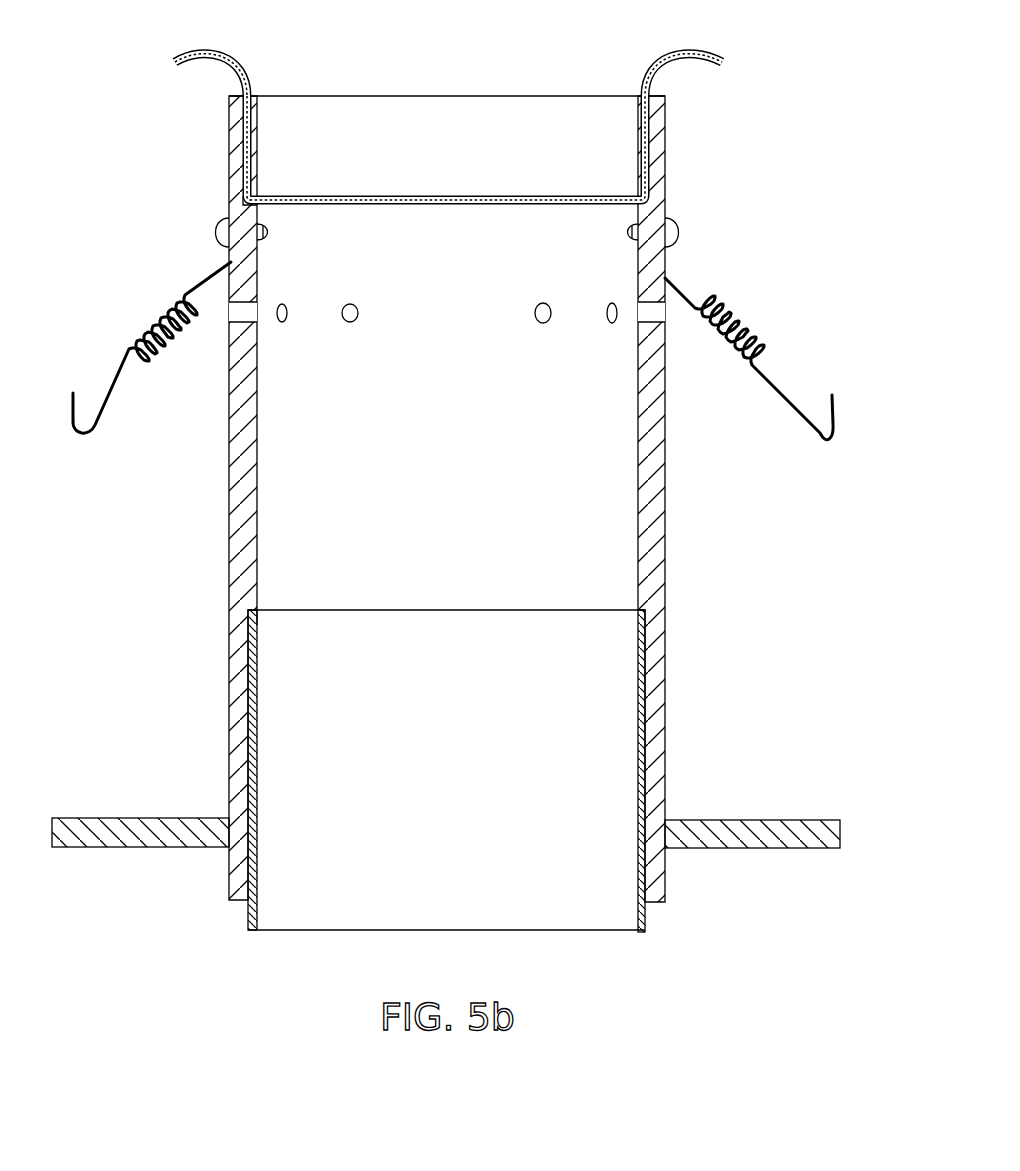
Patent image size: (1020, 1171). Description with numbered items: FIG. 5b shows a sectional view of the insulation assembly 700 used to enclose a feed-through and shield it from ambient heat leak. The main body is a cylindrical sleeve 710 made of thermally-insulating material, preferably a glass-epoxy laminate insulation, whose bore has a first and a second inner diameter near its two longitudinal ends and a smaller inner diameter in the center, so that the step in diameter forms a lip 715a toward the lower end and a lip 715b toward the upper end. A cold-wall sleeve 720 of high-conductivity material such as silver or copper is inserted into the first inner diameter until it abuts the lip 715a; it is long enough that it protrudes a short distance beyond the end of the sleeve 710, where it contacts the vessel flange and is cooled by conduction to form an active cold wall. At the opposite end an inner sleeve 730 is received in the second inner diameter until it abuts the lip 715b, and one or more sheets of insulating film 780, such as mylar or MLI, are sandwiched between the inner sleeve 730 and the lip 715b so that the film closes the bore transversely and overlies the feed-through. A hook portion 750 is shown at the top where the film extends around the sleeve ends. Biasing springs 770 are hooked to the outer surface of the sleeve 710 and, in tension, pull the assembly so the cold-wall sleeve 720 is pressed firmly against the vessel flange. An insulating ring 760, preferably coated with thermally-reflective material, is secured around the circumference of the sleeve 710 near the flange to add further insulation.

The insulation assembly 700 is at (479, 473).
The cylindrical sleeve 710 is at (448, 514).
The lip 715a is at (250, 617).
The lip 715b is at (250, 197).
The cold-wall sleeve 720 is at (641, 695).
The inner sleeve 730 is at (642, 147).
The hook portion 750 is at (200, 58).
The insulating ring 760 is at (808, 828).
The biasing springs 770 is at (150, 316).
The insulating film 780 is at (445, 135).